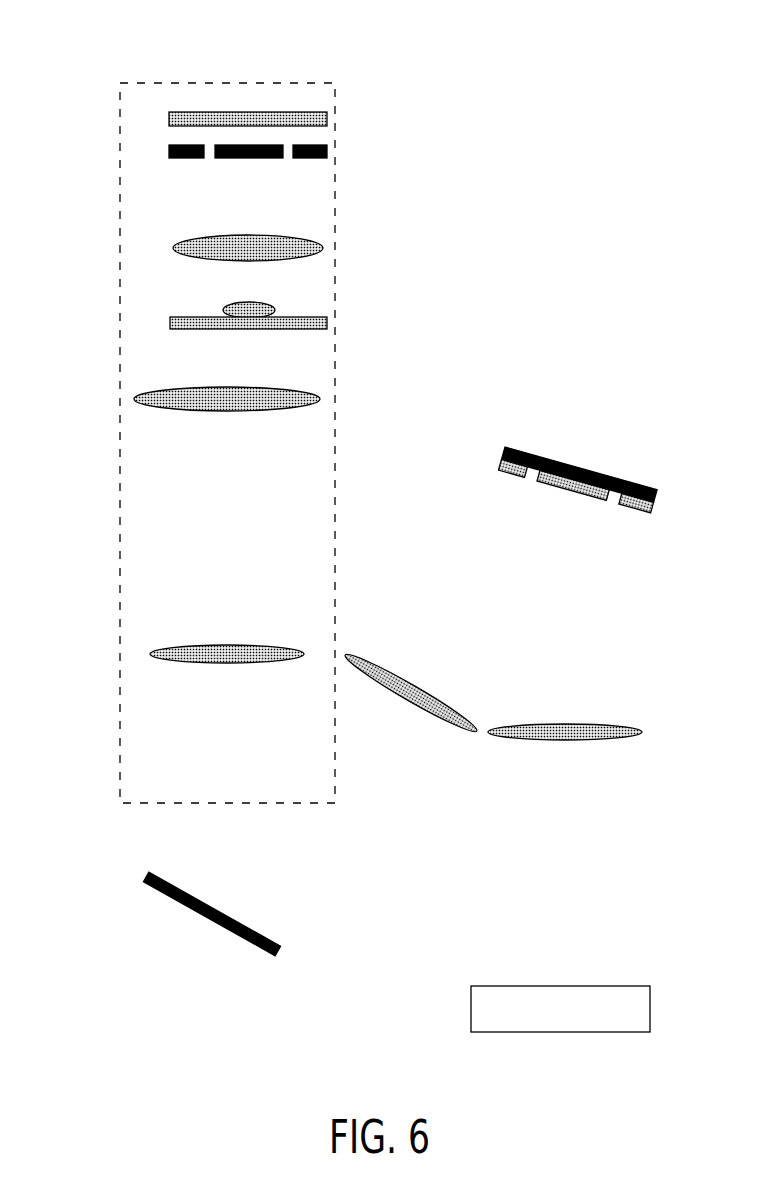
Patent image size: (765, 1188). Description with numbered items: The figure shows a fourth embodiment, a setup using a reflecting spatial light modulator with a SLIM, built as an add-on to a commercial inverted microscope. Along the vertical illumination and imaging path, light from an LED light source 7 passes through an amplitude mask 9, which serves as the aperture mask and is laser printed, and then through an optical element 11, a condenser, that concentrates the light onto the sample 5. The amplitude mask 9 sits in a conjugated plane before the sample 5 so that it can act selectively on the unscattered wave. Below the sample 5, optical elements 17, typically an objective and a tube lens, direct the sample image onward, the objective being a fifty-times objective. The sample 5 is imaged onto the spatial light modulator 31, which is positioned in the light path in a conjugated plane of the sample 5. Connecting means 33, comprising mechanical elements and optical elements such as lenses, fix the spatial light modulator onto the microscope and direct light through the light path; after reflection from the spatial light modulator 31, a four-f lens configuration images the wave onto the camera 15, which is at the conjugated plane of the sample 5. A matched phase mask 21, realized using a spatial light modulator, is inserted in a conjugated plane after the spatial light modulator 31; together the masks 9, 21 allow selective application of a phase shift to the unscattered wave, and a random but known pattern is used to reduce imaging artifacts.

The light source 7 is at (204, 112).
The amplitude mask 9 is at (165, 152).
The optical element 11 is at (172, 247).
The sample 5 is at (168, 322).
The optical elements 17 is at (133, 398).
The phase mask 21 is at (594, 470).
The connecting means 33 is at (517, 739).
The spatial light modulator 31 is at (185, 909).
The camera 15 is at (469, 1009).